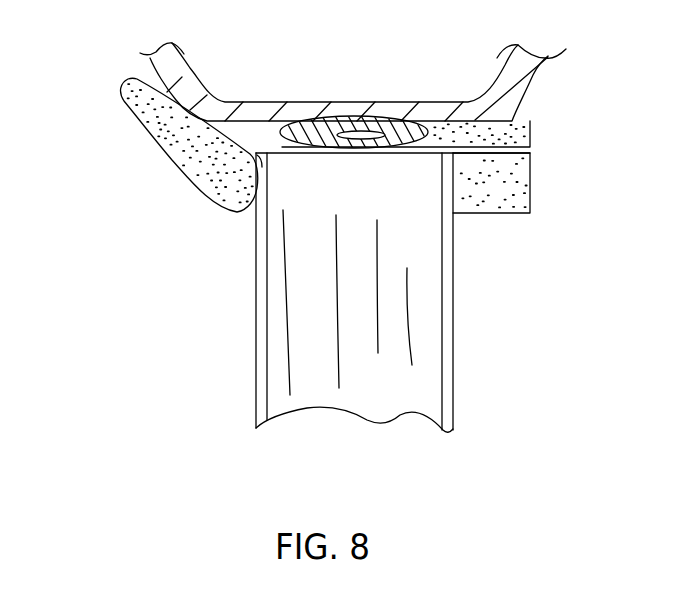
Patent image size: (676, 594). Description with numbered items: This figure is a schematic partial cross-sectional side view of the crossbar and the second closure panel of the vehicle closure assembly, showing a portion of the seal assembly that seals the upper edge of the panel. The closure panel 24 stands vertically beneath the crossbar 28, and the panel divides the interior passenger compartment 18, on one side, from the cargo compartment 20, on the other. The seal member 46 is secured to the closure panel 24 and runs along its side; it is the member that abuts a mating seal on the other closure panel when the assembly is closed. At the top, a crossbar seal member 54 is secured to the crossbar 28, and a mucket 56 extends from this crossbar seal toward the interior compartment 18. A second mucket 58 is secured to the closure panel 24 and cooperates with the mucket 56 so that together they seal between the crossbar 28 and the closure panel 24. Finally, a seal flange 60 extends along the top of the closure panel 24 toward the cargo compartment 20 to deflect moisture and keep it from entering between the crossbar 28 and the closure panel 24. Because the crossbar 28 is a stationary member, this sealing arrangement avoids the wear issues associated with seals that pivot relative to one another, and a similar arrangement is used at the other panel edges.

The interior passenger compartment 18 is at (618, 268).
The cargo compartment 20 is at (105, 234).
The closure panel 24 is at (394, 292).
The crossbar 28 is at (312, 102).
The seal member 46 is at (441, 302).
The crossbar seal member 54 is at (290, 147).
The mucket 56 is at (531, 127).
The mucket 58 is at (531, 193).
The seal flange 60 is at (133, 130).